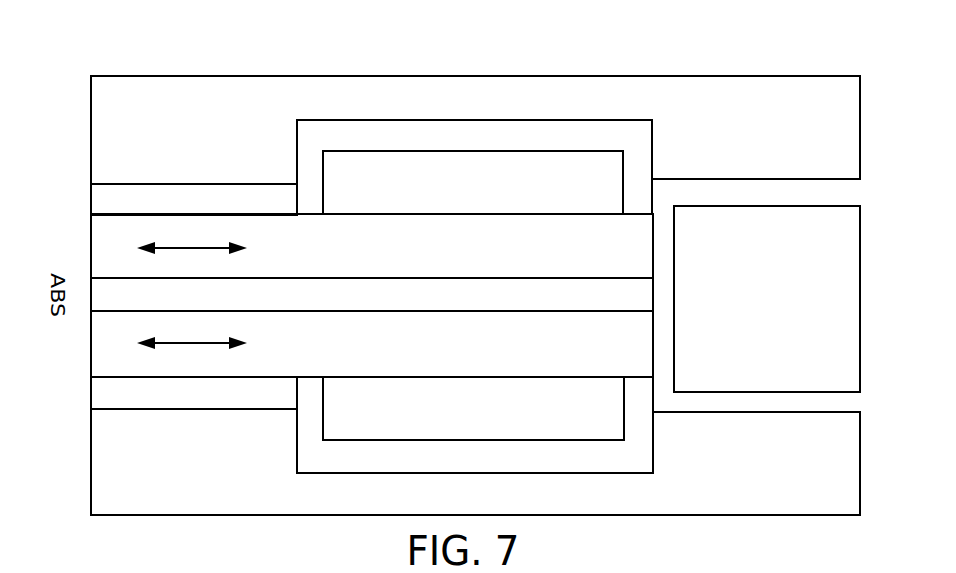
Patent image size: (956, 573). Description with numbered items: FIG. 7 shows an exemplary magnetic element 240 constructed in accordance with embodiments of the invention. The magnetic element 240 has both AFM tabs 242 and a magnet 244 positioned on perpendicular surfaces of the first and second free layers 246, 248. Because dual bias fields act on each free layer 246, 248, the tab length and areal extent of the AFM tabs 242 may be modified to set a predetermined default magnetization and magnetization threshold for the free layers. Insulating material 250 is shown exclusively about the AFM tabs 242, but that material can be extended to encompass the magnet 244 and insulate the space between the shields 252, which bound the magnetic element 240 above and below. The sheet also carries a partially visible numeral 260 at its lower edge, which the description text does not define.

The magnetic element 240 is at (117, 60).
The AFM tabs 242 is at (473, 295).
The magnet 244 is at (767, 299).
The first free layer 246 is at (372, 246).
The second free layer 248 is at (372, 344).
The insulating material 250 is at (475, 296).
The shields 252 is at (475, 295).
The magnetic read sensor (next figure) 260 is at (90, 571).